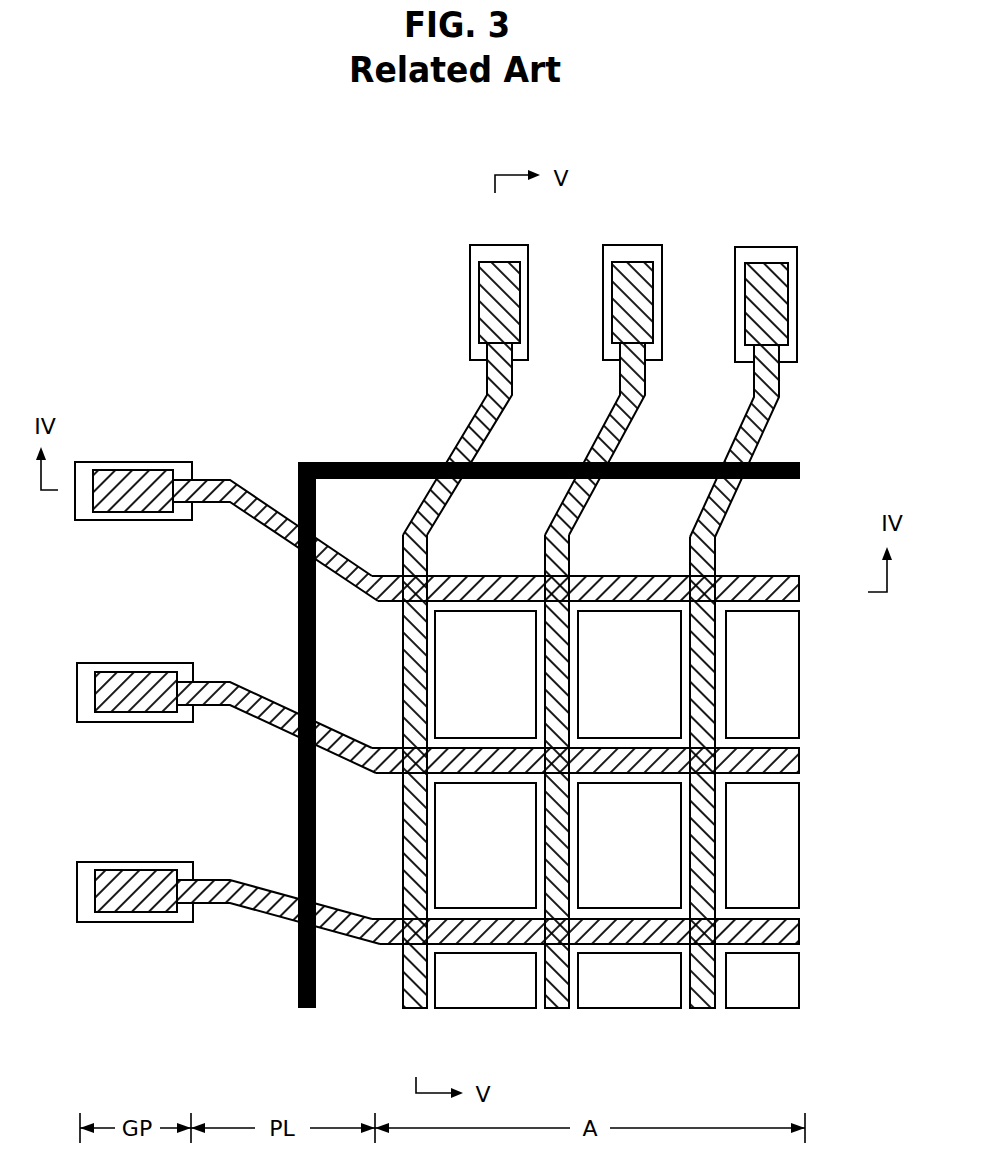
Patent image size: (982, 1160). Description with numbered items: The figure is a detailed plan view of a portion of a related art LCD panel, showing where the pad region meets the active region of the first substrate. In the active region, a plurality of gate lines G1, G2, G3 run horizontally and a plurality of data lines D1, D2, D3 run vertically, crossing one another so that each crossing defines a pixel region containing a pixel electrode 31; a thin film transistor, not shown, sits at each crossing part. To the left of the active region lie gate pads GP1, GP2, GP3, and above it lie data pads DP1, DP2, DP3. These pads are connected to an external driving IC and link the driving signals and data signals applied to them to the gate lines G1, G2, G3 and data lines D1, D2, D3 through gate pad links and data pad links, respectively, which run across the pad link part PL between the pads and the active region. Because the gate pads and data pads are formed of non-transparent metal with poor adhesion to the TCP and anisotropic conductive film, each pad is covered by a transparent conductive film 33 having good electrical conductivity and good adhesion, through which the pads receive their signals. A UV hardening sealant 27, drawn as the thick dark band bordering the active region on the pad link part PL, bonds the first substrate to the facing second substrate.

The UV hardening sealant 27 is at (773, 482).
The pixel electrode 31 is at (667, 851).
The transparent conductive film 33 is at (478, 284).
The gate pad GP1 is at (125, 478).
The gate pad GP2 is at (125, 680).
The gate pad GP3 is at (128, 874).
The data pad DP1 is at (505, 266).
The data pad DP2 is at (637, 266).
The data pad DP3 is at (771, 266).
The gate line G1 is at (799, 590).
The gate line G2 is at (799, 762).
The gate line G3 is at (799, 932).
The data line D1 is at (413, 1010).
The data line D2 is at (557, 1010).
The data line D3 is at (700, 1010).
The pad link part PL is at (260, 528).